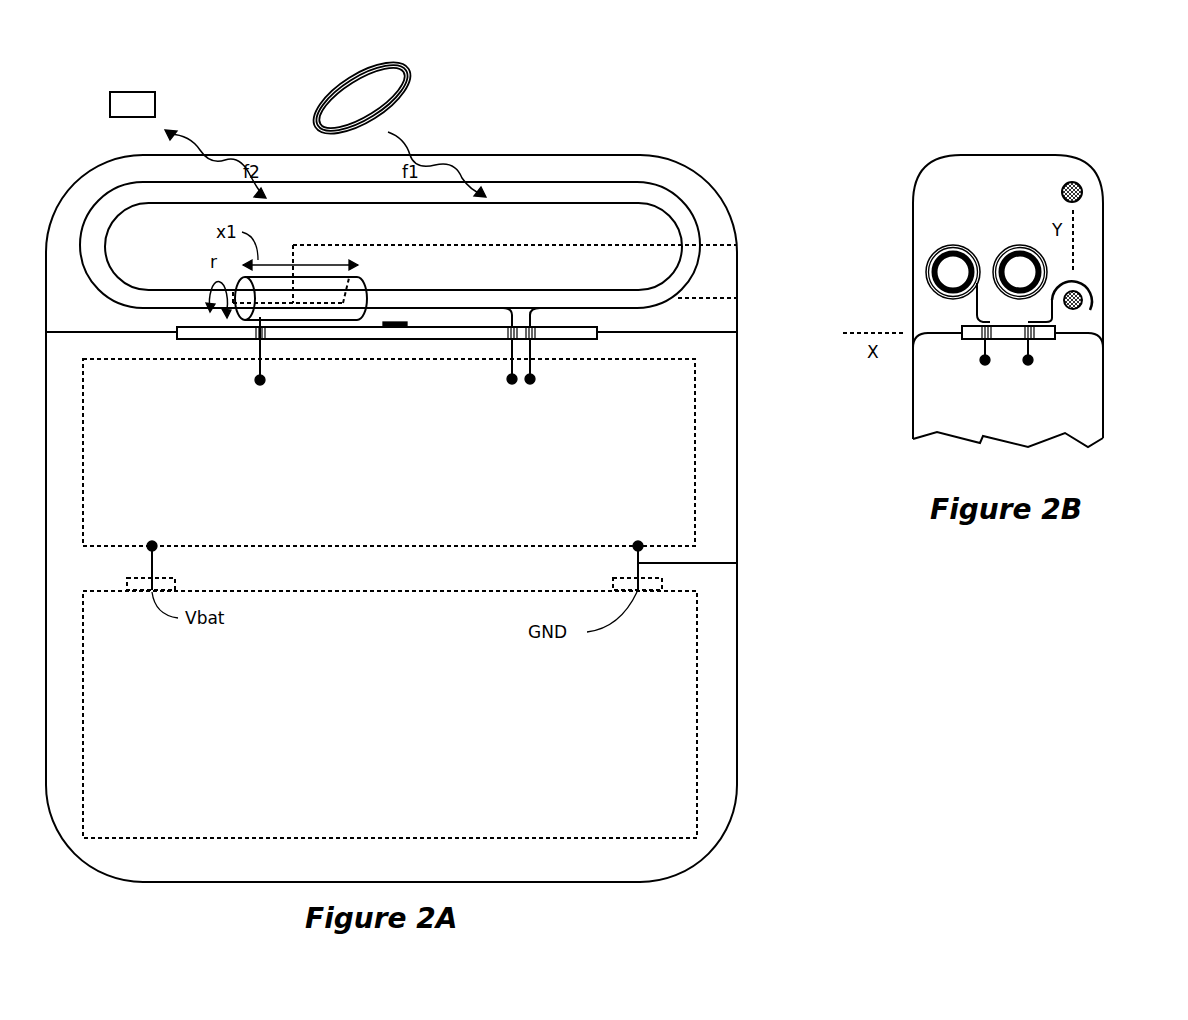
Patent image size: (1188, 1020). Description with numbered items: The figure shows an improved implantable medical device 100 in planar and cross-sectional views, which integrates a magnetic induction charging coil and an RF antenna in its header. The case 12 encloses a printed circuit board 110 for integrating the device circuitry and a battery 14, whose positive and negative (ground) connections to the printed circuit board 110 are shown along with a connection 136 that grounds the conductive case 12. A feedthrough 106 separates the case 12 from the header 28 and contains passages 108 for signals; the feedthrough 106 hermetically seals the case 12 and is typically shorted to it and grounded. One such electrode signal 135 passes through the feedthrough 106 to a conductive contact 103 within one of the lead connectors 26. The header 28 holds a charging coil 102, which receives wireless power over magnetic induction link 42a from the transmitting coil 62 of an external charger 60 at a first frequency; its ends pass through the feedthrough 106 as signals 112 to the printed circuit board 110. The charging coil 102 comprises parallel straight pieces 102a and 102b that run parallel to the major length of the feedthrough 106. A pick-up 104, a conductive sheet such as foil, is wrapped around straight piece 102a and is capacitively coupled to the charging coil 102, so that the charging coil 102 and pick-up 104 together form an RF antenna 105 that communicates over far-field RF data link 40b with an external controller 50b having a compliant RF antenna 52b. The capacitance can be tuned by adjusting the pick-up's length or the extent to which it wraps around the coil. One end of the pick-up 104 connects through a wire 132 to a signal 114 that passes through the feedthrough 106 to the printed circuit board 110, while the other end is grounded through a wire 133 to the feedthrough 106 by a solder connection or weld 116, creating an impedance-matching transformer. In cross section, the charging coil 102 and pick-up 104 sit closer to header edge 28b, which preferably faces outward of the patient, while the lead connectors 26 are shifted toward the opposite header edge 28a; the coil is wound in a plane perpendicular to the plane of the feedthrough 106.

In FIG. 2A, the implantable medical device 100 is at (477, 476).
In FIG. 2A, the header 28 is at (655, 176).
In FIG. 2B, the header 28 is at (930, 172).
In FIG. 2B, the header edge 28a is at (913, 300).
In FIG. 2B, the header edge 28b is at (1103, 232).
In FIG. 2A, the case 12 is at (737, 605).
In FIG. 2B, the case 12 is at (913, 365).
In FIG. 2A, the battery 14 is at (677, 722).
In FIG. 2A, the lead connector 26 is at (710, 245).
In FIG. 2B, the lead connector 26 is at (1020, 245).
In FIG. 2A, the charging coil 102 is at (552, 182).
In FIG. 2B, the charging coil 102 is at (1082, 186).
In FIG. 2A, the straight piece 102a is at (468, 290).
In FIG. 2A, the straight piece 102b is at (525, 205).
In FIG. 2B, the conductive contact 103 is at (930, 264).
In FIG. 2A, the pick-up 104 is at (363, 280).
In FIG. 2B, the pick-up 104 is at (1090, 285).
In FIG. 2A, the RF antenna 105 is at (325, 243).
In FIG. 2B, the RF antenna 105 is at (1098, 323).
In FIG. 2A, the feedthrough 106 is at (578, 340).
In FIG. 2B, the feedthrough 106 is at (1003, 340).
In FIG. 2A, the passage 108 is at (507, 329).
In FIG. 2B, the passage 108 is at (982, 335).
In FIG. 2A, the printed circuit board 110 is at (680, 432).
In FIG. 2A, the charging coil signals 112 is at (539, 390).
In FIG. 2A, the pick-up signal 114 is at (258, 364).
In FIG. 2B, the pick-up signal 114 is at (1028, 357).
In FIG. 2A, the solder connection or weld 116 is at (395, 327).
In FIG. 2A, the wire 132 is at (253, 351).
In FIG. 2B, the wire 132 is at (1028, 322).
In FIG. 2A, the wire 133 is at (380, 323).
In FIG. 2B, the electrode signal 135 is at (984, 357).
In FIG. 2A, the connection 136 is at (677, 563).
In FIG. 2A, the RF data link 40b is at (215, 163).
In FIG. 2A, the wireless link 42a is at (437, 160).
In FIG. 2A, the external controller 50b is at (91, 76).
In FIG. 2A, the RF compliant antenna 52b is at (122, 103).
In FIG. 2A, the external charger 60 is at (392, 81).
In FIG. 2A, the transmitting coil 62 is at (355, 72).